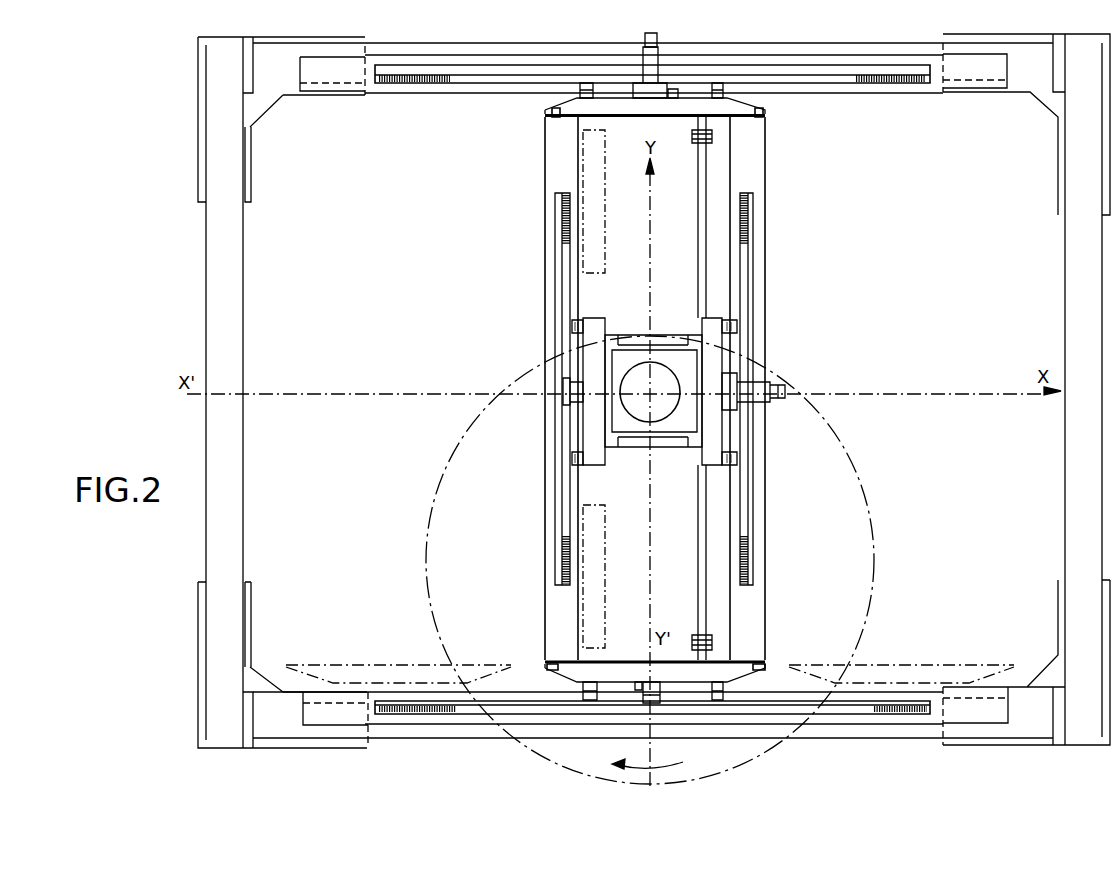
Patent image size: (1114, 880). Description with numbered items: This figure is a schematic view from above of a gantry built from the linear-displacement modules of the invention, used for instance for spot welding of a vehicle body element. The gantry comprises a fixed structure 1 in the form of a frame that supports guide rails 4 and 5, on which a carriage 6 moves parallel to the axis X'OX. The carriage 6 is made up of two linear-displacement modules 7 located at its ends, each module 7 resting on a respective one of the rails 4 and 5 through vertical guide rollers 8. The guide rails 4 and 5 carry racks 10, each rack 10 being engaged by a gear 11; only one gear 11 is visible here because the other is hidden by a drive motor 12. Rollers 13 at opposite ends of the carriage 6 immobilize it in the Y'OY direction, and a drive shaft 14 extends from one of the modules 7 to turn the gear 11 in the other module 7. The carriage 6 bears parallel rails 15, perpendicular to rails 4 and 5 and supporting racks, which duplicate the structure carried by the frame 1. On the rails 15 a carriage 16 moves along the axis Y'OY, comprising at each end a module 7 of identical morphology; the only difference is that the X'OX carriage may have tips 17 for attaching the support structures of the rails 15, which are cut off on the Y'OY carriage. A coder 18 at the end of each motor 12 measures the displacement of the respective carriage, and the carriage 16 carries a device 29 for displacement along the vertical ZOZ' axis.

The fixed structure 1 is at (1071, 441).
The guide rail 4 is at (873, 728).
The guide rail 5 is at (908, 84).
The carriage 6 is at (752, 652).
The linear-displacement module 7 is at (615, 104).
The vertical guide roller 8 is at (722, 82).
The rack 10 is at (828, 76).
The gear 11 is at (652, 702).
The drive motor 12 is at (656, 58).
The roller 13 is at (680, 92).
The drive shaft 14 is at (701, 234).
The rail 15 is at (557, 592).
The carriage 16 is at (678, 422).
The tip 17 is at (553, 109).
The coder 18 is at (645, 40).
The device for displacement along the ZOZ' axis 29 is at (662, 372).